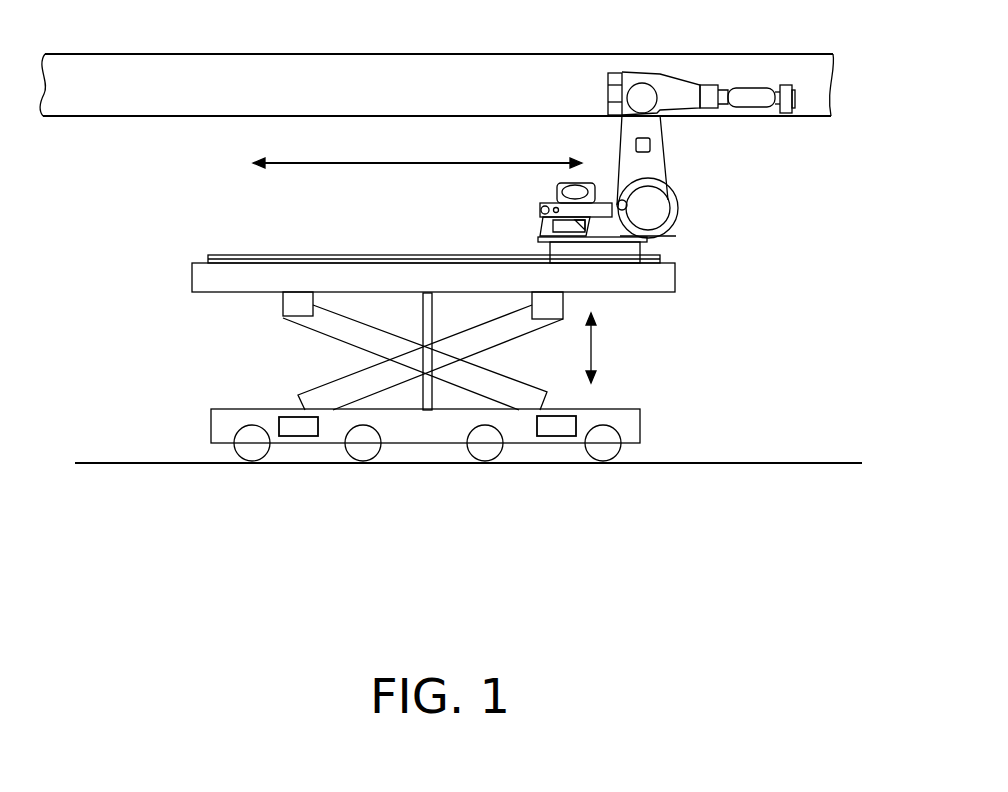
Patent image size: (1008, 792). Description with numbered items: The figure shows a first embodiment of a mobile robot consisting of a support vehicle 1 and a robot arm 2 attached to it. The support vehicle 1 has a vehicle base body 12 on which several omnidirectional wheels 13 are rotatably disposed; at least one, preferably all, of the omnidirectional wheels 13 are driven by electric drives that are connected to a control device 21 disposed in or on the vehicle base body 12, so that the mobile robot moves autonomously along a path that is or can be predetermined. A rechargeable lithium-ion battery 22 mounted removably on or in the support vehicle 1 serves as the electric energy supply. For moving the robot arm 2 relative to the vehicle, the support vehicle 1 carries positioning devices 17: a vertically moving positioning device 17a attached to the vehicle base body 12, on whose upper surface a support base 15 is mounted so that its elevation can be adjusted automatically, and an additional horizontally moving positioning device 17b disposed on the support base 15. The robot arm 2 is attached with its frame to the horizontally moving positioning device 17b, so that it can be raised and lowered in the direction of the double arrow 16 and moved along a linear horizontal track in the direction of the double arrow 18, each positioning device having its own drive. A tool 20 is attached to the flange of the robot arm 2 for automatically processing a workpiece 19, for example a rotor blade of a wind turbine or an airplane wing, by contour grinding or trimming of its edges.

The support vehicle 1 is at (160, 378).
The robot arm 2 is at (655, 170).
The vehicle base body 12 is at (425, 432).
The omnidirectional wheels 13 is at (363, 448).
The support base 15 is at (208, 277).
The double arrow 16 is at (595, 350).
The positioning devices 17 is at (395, 271).
The vertically moving positioning device 17a is at (323, 313).
The horizontally moving positioning device 17b is at (471, 260).
The double arrow 18 is at (346, 170).
The workpiece 19 is at (117, 144).
The tool 20 is at (789, 115).
The control device 21 is at (561, 428).
The lithium-ion battery 22 is at (296, 425).